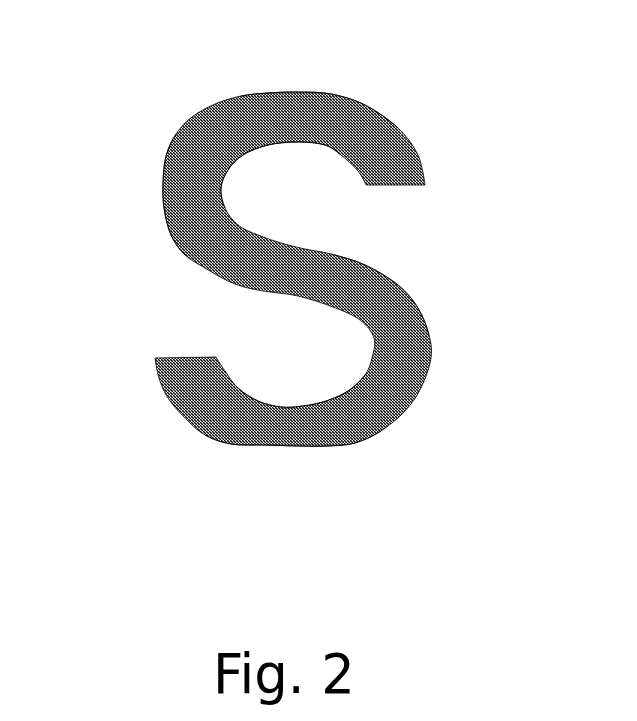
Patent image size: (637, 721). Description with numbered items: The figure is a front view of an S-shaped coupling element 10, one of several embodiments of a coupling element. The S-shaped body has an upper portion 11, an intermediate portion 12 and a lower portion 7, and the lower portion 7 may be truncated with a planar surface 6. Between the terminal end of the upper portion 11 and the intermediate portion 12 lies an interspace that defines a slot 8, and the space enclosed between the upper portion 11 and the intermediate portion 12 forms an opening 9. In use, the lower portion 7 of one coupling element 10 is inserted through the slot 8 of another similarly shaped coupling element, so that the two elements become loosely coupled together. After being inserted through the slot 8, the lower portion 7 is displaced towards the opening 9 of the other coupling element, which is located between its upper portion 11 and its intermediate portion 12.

The planar surface 6 is at (293, 433).
The lower portion 7 is at (282, 412).
The slot 8 is at (382, 208).
The opening 9 is at (260, 186).
The S-shaped coupling element 10 is at (472, 199).
The upper portion 11 is at (350, 100).
The intermediate portion 12 is at (200, 260).